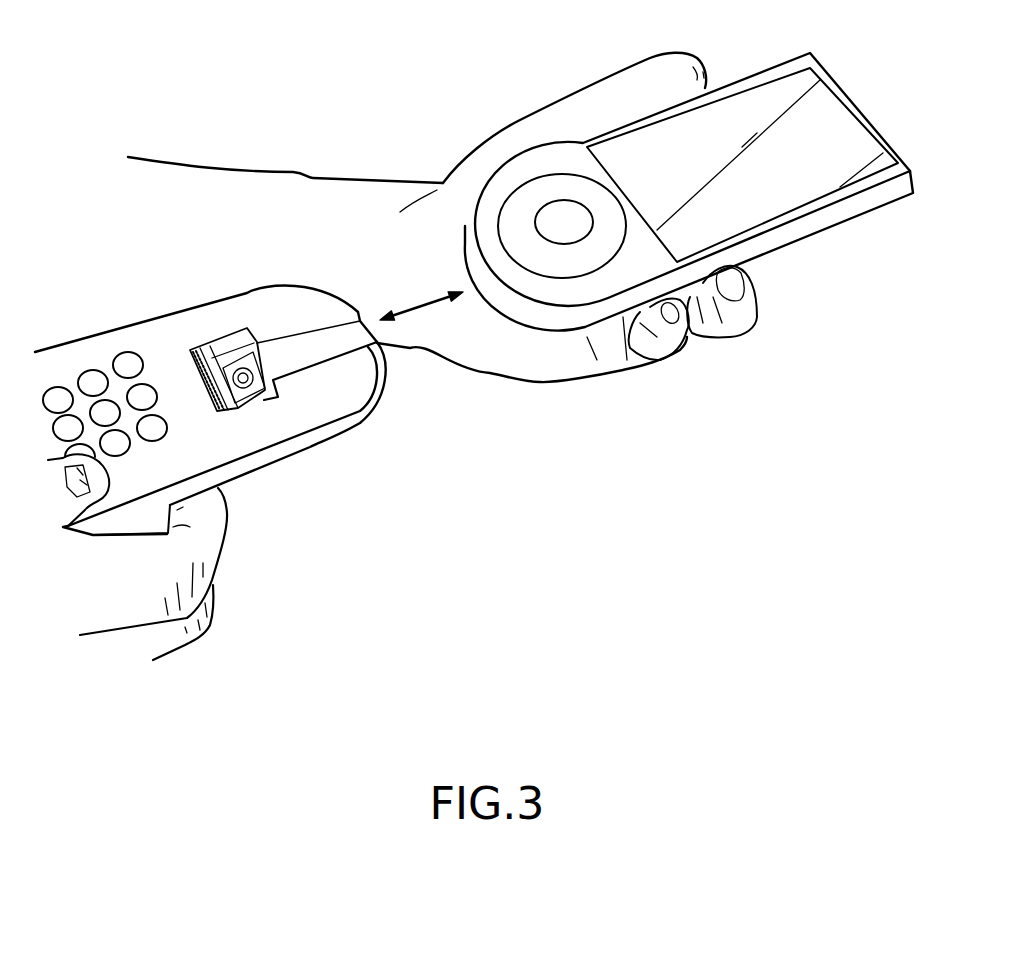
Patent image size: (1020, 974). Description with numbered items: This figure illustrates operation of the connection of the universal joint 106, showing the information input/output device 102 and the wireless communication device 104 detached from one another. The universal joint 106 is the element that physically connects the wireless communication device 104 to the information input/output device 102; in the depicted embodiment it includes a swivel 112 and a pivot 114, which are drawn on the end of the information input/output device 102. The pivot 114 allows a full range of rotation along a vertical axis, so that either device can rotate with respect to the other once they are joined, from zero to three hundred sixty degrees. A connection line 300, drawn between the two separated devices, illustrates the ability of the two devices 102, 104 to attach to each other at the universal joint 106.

The information input/output device 102 is at (315, 447).
The wireless communication device 104 is at (800, 247).
The universal joint 106 is at (181, 349).
The swivel 112 is at (217, 410).
The pivot 114 is at (252, 390).
The connection line 300 is at (427, 307).